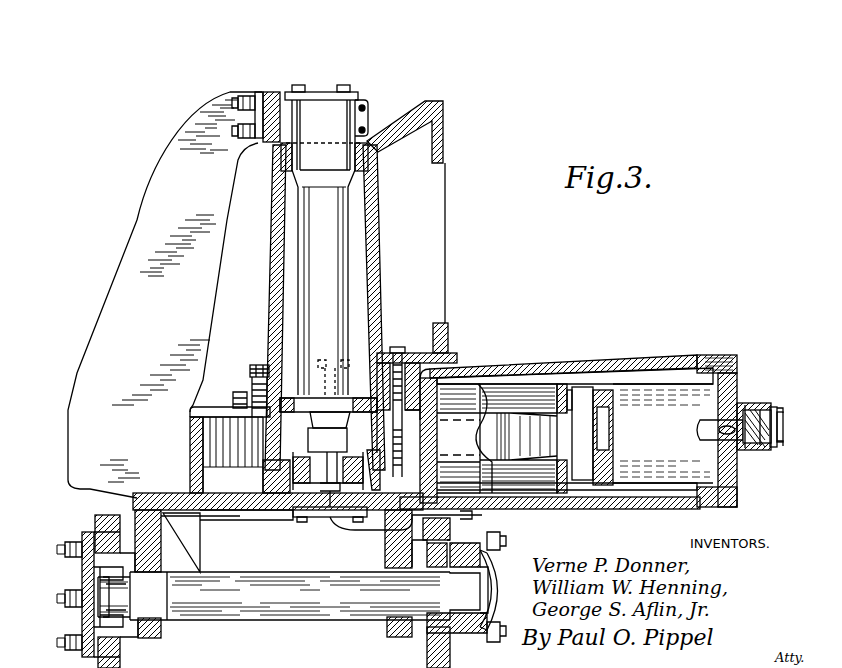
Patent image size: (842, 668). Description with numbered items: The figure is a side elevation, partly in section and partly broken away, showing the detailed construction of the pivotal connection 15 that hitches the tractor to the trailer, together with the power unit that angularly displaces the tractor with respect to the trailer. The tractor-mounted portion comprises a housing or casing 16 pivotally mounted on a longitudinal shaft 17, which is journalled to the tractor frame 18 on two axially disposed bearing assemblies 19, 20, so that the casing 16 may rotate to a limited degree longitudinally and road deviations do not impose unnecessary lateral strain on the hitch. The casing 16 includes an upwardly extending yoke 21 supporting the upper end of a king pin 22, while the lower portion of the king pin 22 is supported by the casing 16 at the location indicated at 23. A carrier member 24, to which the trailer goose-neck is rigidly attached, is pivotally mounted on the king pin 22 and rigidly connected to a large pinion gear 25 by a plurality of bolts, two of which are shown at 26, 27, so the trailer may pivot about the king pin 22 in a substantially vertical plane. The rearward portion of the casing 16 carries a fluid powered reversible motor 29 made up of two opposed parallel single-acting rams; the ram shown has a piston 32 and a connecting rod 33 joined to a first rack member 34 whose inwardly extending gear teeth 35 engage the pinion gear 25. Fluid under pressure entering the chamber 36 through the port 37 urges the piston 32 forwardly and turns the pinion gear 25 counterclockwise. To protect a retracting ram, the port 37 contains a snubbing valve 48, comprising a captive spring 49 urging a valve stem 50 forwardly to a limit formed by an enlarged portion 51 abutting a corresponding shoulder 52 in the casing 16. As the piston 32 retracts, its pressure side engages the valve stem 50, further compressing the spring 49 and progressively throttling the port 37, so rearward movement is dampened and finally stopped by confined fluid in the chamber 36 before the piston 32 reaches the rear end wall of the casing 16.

The pivotal connection 15 is at (424, 90).
The casing 16 is at (465, 372).
The longitudinal shaft 17 is at (290, 620).
The tractor frame 18 is at (95, 518).
The bearing assembly 19 is at (82, 622).
The bearing assembly 20 is at (500, 560).
The yoke 21 is at (120, 277).
The king pin 22 is at (340, 245).
The lower king pin support 23 is at (248, 390).
The carrier member 24 is at (447, 108).
The pinion gear 25 is at (250, 505).
The bolt 26 is at (262, 365).
The bolt 27 is at (400, 347).
The fluid powered reversible motor 29 is at (634, 357).
The piston 32 is at (590, 410).
The connecting rod 33 is at (528, 410).
The first rack member 34 is at (472, 446).
The gear teeth 35 is at (203, 444).
The chamber 36 is at (670, 429).
The port 37 is at (777, 438).
The snubbing valve 48 is at (752, 453).
The captive spring 49 is at (783, 422).
The valve stem 50 is at (705, 440).
The enlarged portion 51 is at (760, 410).
The shoulder 52 is at (748, 405).